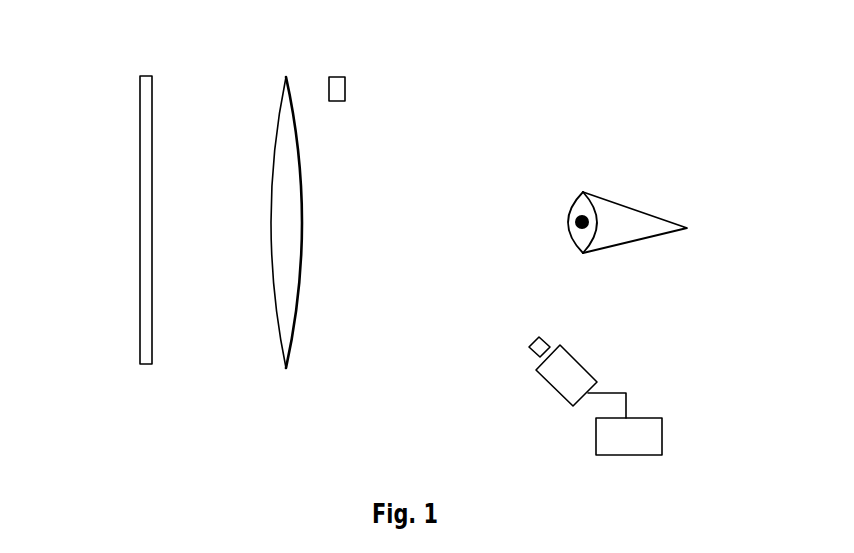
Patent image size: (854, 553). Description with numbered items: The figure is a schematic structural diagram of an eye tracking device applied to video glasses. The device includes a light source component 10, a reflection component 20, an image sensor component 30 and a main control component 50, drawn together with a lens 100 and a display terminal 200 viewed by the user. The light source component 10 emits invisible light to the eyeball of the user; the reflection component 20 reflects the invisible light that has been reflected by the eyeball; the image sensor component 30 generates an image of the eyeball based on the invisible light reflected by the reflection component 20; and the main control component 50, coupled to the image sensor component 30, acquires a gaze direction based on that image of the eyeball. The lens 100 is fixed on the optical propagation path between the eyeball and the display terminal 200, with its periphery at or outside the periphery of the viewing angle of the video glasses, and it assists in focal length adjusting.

The display terminal 200 is at (141, 217).
The lens 100 is at (271, 222).
The reflection component 20 is at (300, 219).
The light source component 10 is at (337, 77).
The image sensor component 30 is at (584, 370).
The main control component 50 is at (662, 435).